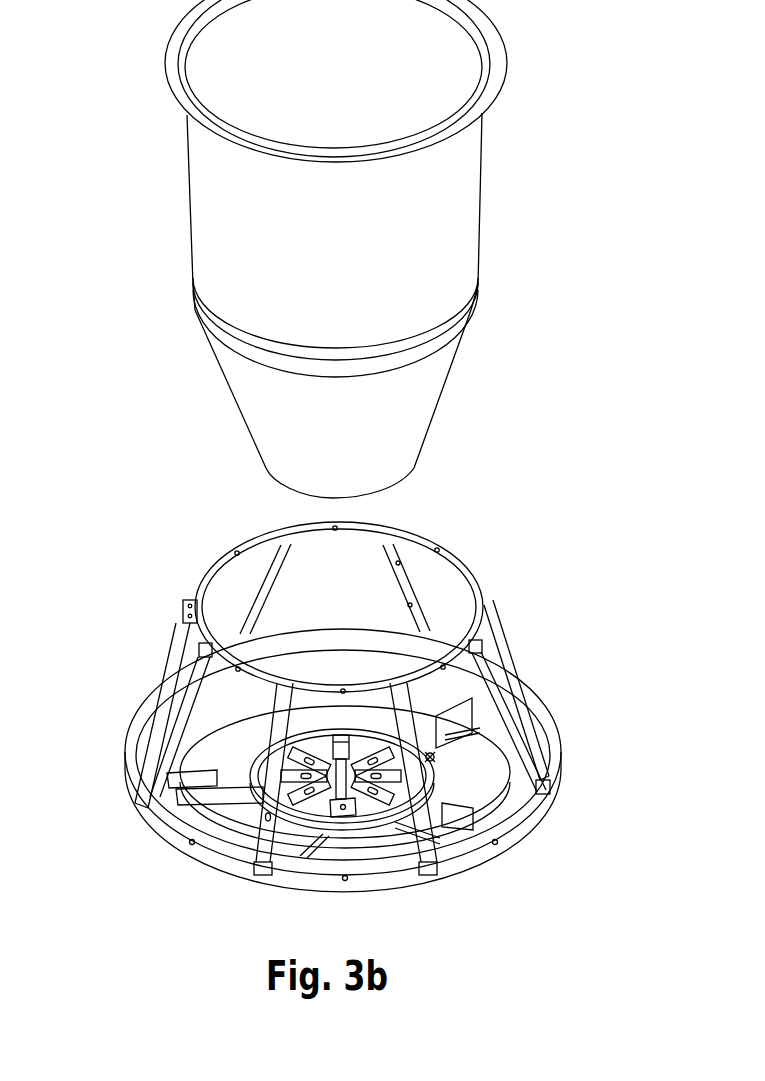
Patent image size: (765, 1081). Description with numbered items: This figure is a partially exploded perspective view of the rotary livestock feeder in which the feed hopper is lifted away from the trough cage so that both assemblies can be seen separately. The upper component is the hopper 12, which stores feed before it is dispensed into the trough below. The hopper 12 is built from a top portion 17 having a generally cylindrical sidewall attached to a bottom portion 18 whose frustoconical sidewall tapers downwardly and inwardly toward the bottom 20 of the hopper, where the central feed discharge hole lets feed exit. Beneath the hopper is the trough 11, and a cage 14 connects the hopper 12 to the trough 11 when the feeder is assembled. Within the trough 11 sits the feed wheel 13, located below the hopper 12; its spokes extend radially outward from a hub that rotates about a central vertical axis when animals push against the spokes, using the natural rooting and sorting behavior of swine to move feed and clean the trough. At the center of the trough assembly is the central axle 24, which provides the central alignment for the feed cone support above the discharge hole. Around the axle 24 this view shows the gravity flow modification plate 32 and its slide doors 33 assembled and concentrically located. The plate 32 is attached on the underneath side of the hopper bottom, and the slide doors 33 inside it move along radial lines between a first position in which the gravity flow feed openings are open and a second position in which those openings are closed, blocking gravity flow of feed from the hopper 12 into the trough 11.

The hopper 12 is at (458, 218).
The top portion 17 is at (208, 210).
The bottom portion 18 is at (243, 387).
The bottom 20 is at (277, 485).
The cage 14 is at (218, 563).
The trough 11 is at (200, 703).
The central axle 24 is at (340, 747).
The slide doors 33 is at (330, 802).
The gravity flow modification plate 32 is at (430, 757).
The feed wheel 13 is at (470, 822).